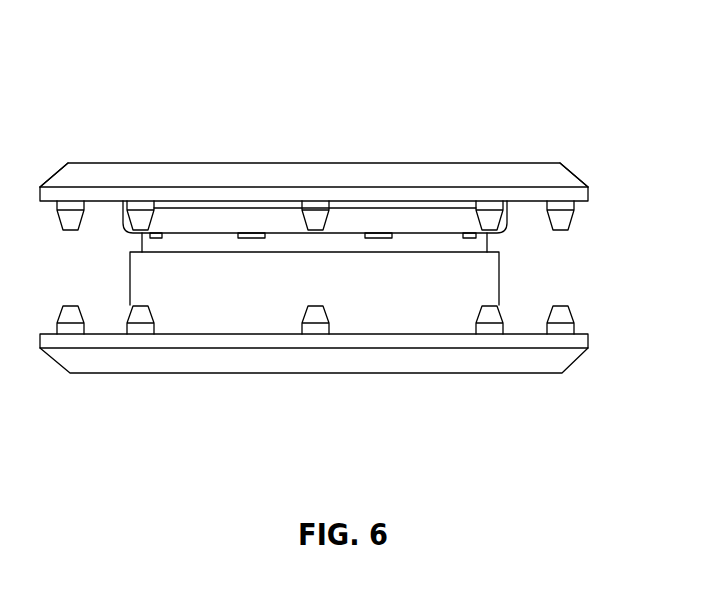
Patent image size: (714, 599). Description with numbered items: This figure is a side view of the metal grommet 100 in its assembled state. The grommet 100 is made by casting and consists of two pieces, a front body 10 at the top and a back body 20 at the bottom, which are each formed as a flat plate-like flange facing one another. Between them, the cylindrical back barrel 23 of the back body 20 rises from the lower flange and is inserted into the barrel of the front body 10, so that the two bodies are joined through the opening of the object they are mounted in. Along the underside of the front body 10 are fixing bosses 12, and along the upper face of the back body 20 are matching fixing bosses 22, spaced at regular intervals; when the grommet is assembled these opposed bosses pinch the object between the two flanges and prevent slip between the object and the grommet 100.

The metal grommet 100 is at (356, 245).
The front body 10 is at (218, 187).
The fixing bosses 12 is at (567, 218).
The back body 20 is at (465, 360).
The fixing bosses 22 is at (562, 313).
The back barrel 23 is at (243, 310).